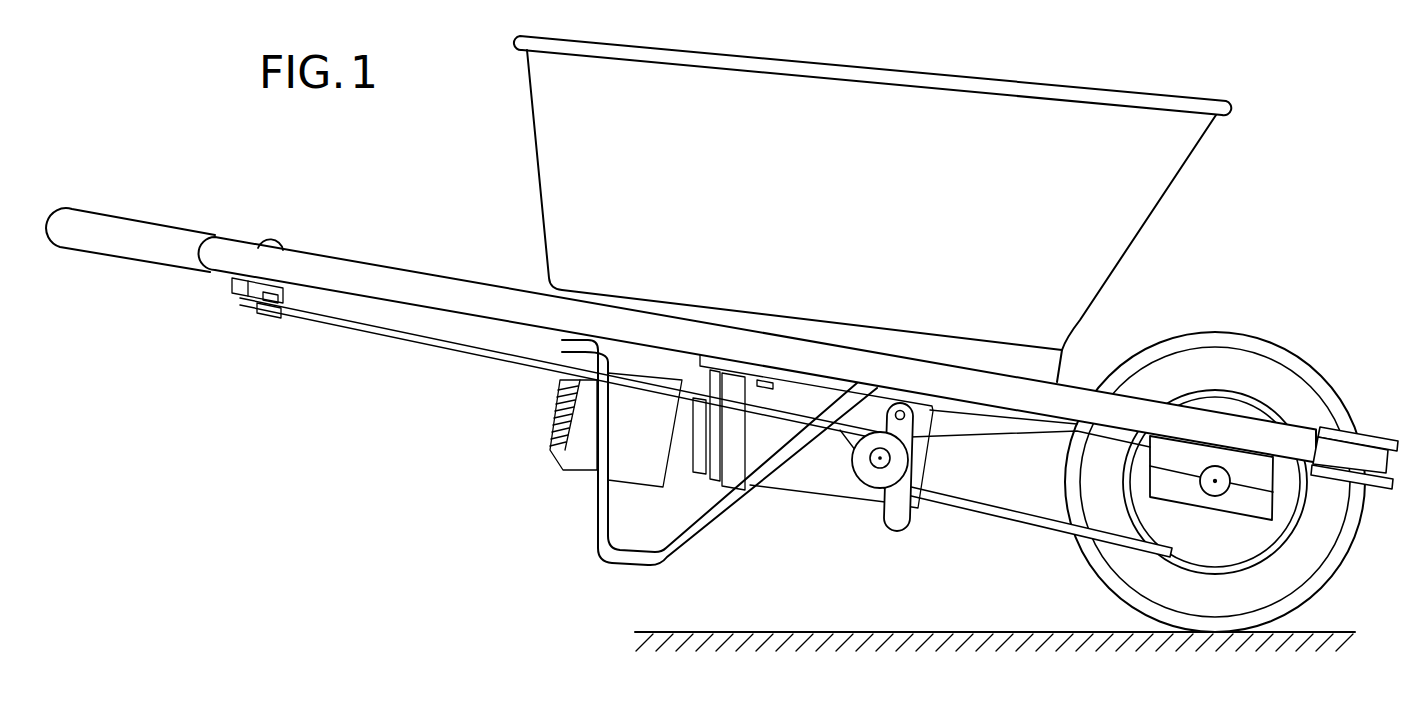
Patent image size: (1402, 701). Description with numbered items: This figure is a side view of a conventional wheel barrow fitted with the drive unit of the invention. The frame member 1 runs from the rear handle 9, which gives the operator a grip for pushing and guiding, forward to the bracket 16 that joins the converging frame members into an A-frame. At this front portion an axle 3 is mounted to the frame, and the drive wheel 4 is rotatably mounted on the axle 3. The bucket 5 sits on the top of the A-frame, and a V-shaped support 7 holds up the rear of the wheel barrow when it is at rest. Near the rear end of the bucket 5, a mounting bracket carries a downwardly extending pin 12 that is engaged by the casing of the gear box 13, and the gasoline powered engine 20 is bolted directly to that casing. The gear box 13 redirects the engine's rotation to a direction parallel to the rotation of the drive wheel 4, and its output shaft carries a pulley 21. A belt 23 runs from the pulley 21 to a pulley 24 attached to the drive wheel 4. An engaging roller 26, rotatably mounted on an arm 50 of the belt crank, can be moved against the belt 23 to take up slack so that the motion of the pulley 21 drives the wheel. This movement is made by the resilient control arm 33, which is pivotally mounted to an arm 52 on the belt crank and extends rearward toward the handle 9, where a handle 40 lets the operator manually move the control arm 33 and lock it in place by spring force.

The frame member 1 is at (1297, 437).
The axle 3 is at (1223, 490).
The drive wheel 4 is at (1265, 367).
The bucket 5 is at (1153, 200).
The V-shaped support 7 is at (730, 512).
The handle 9 is at (145, 228).
The pin 12 is at (713, 478).
The gear box 13 is at (687, 450).
The bracket 16 is at (1372, 432).
The gasoline powered engine 20 is at (578, 465).
The pulley 21 is at (852, 471).
The belt 23 is at (1020, 522).
The pulley 24 is at (1230, 547).
The engaging roller 26 is at (905, 410).
The control arm 33 is at (653, 385).
The handle 40 is at (278, 230).
The arm 50 is at (890, 425).
The arm 52 is at (882, 507).